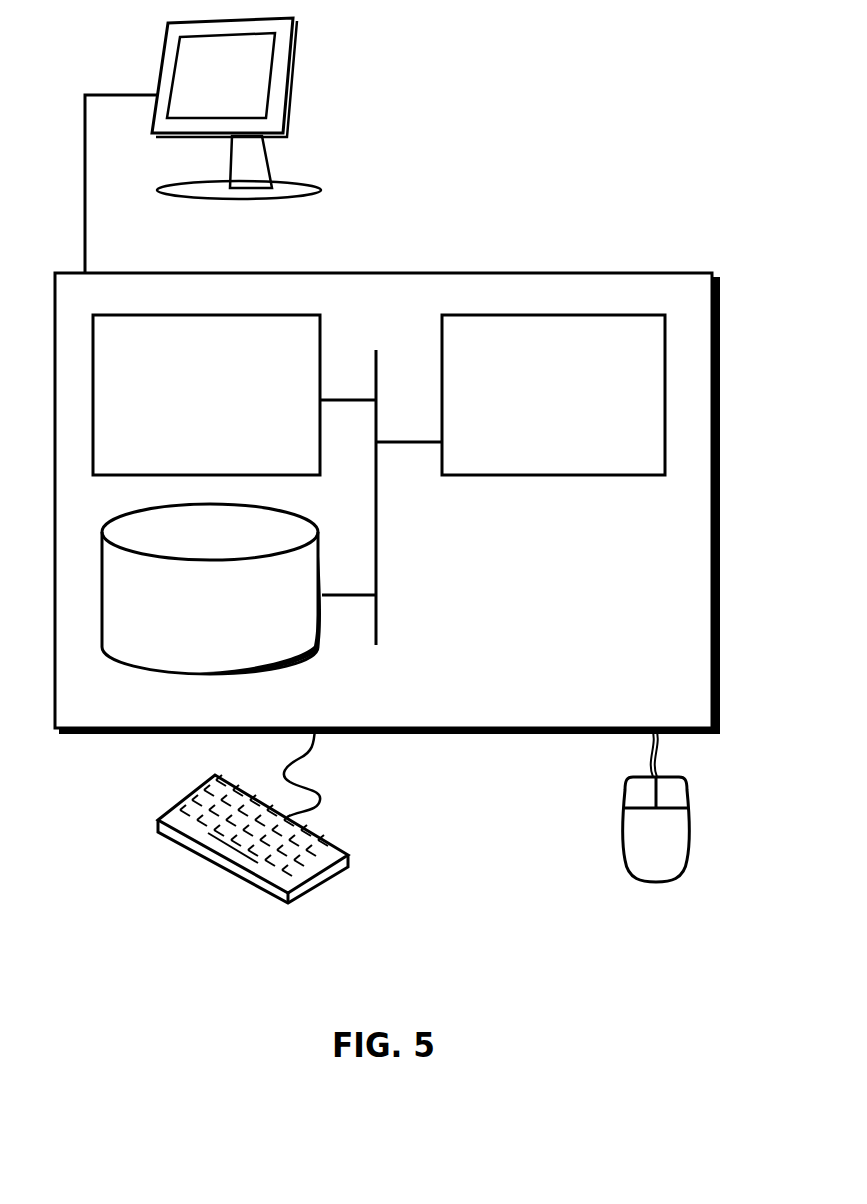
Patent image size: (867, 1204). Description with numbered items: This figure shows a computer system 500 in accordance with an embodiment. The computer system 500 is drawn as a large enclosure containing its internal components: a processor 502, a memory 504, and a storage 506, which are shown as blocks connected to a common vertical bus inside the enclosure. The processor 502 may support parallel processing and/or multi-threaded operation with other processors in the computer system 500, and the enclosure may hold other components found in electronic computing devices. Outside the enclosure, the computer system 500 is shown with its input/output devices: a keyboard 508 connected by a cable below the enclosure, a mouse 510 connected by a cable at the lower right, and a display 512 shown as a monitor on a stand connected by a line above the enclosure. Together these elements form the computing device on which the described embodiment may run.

The computer system 500 is at (432, 252).
The processor 502 is at (553, 395).
The memory 504 is at (206, 395).
The storage 506 is at (211, 589).
The keyboard 508 is at (178, 833).
The mouse 510 is at (656, 805).
The display 512 is at (203, 145).